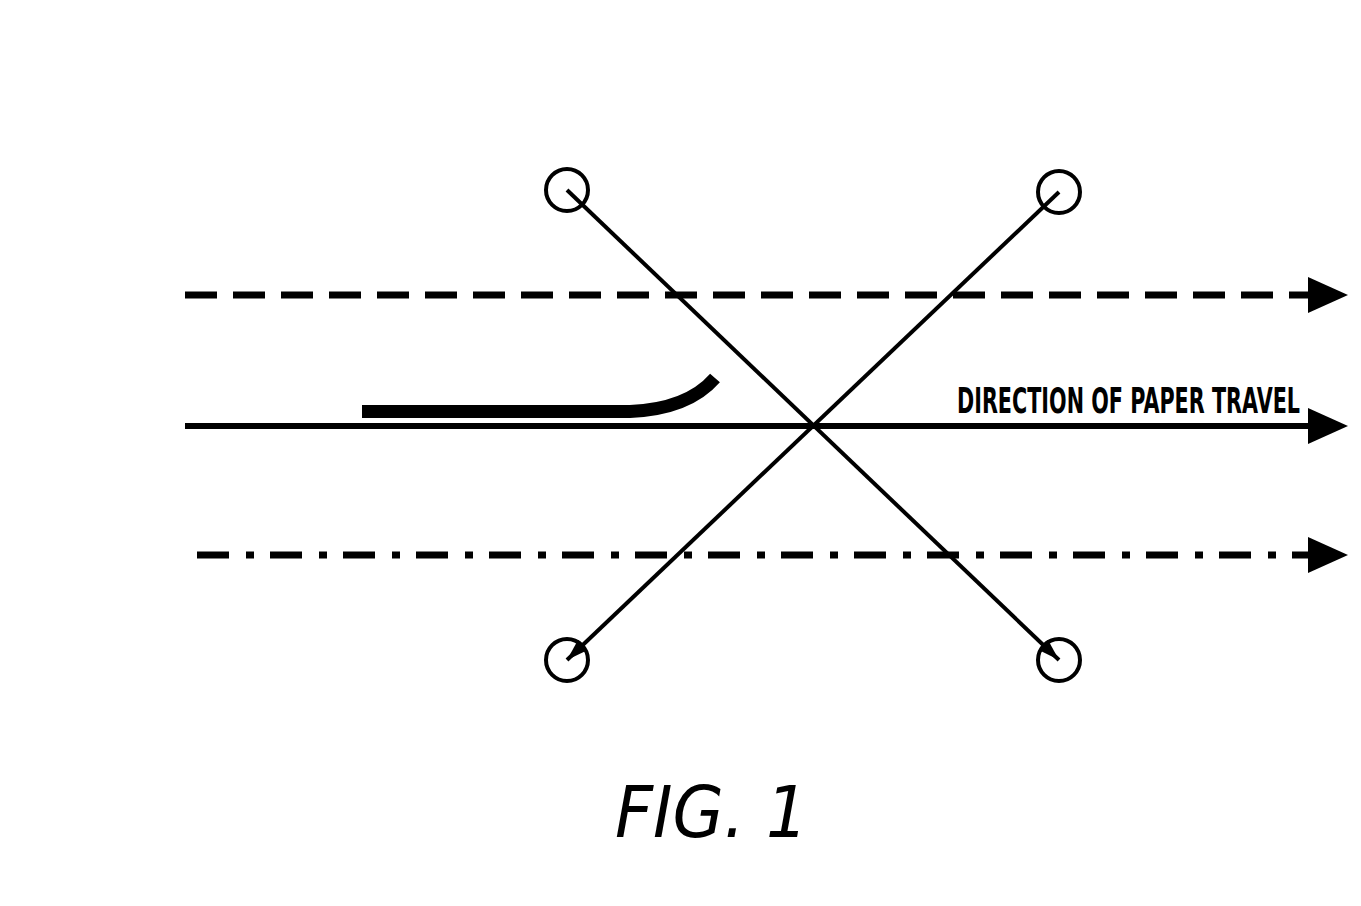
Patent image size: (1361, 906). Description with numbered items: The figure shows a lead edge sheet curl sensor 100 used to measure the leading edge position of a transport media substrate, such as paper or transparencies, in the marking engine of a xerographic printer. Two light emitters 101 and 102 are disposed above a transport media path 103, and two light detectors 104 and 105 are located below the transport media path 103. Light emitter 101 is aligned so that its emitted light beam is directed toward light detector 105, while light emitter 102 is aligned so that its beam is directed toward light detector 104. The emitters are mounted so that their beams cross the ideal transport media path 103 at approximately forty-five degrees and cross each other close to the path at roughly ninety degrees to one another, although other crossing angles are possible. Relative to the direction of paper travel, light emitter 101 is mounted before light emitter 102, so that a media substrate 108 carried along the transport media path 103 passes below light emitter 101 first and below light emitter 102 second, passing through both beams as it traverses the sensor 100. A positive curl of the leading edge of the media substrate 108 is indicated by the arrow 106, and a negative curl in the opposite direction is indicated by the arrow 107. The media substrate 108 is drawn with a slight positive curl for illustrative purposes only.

The lead edge sheet curl sensor 100 is at (1182, 110).
The light emitter 101 is at (560, 97).
The light emitter 102 is at (1057, 98).
The transport media path 103 is at (167, 394).
The light detector 104 is at (525, 640).
The light detector 105 is at (1082, 637).
The positive curl arrow 106 is at (167, 264).
The negative curl arrow 107 is at (167, 524).
The media substrate 108 is at (497, 405).